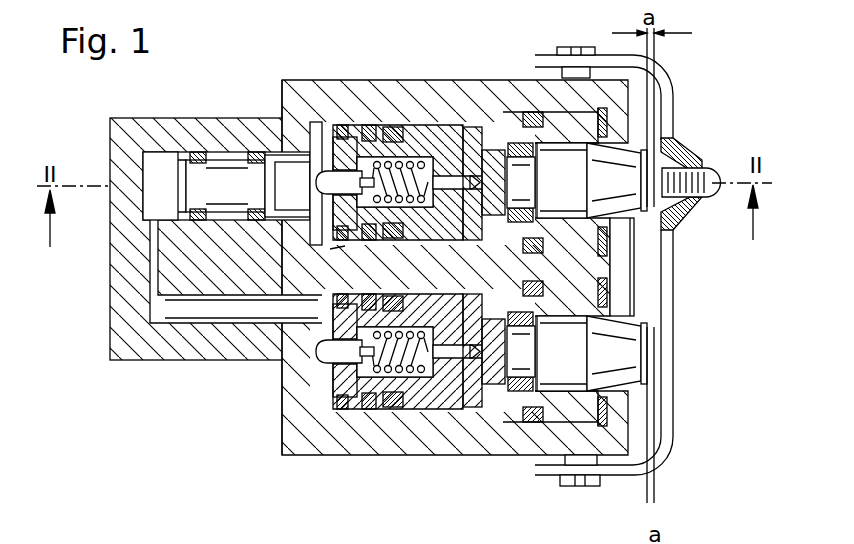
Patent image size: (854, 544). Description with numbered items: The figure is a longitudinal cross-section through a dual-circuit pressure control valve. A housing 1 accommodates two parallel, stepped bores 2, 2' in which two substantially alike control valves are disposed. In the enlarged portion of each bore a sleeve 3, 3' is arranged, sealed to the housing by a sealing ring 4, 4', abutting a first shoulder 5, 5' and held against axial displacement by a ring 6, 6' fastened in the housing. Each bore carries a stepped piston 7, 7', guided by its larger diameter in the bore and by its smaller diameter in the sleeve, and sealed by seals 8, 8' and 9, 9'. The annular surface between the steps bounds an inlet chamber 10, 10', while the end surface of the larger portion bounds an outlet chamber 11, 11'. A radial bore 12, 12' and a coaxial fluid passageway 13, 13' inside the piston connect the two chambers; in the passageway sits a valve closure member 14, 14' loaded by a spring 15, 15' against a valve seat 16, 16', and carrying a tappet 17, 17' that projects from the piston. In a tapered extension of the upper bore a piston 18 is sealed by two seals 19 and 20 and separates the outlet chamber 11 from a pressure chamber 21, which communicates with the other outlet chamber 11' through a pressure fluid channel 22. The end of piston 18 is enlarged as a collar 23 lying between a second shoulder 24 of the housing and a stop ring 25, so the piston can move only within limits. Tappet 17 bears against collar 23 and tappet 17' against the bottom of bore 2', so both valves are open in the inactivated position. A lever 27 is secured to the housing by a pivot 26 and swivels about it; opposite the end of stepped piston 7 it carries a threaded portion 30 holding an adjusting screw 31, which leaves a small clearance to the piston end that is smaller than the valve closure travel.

The housing 1 is at (207, 338).
The stepped bore 2 is at (469, 138).
The sleeve 3 is at (550, 77).
The sealing ring 4 is at (532, 144).
The first shoulder 5 is at (513, 122).
The ring 6 is at (653, 175).
The stepped piston 7 is at (624, 172).
The seal 8 is at (398, 126).
The seal 9 is at (517, 117).
The inlet chamber 10 is at (486, 113).
The outlet chamber 11 is at (334, 126).
The radial bore 12 is at (456, 100).
The fluid passageway 13 is at (386, 137).
The valve closure member 14 is at (365, 126).
The spring 15 is at (403, 119).
The valve seat 16 is at (384, 121).
The tappet 17 is at (336, 115).
The piston 18 is at (225, 170).
The seal 19 is at (198, 147).
The seal 20 is at (258, 165).
The pressure chamber 21 is at (158, 163).
The pressure fluid channel 22 is at (178, 315).
The collar 23 is at (293, 165).
The second shoulder 24 is at (312, 124).
The stop ring 25 is at (345, 246).
The pivot 26 is at (572, 48).
The lever 27 is at (670, 283).
The threaded portion 30 is at (683, 203).
The adjusting screw 31 is at (700, 173).
The stepped bore 2' is at (484, 419).
The sleeve 3' is at (563, 455).
The sealing ring 4' is at (542, 400).
The first shoulder 5' is at (518, 423).
The ring 6' is at (661, 353).
The stepped piston 7' is at (632, 349).
The seal 8' is at (398, 419).
The seal 9' is at (524, 428).
The inlet chamber 10' is at (472, 431).
The outlet chamber 11' is at (341, 407).
The radial bore 12' is at (463, 432).
The fluid passageway 13' is at (418, 408).
The valve closure member 14' is at (366, 419).
The spring 15' is at (400, 426).
The valve seat 16' is at (336, 383).
The tappet 17' is at (300, 371).